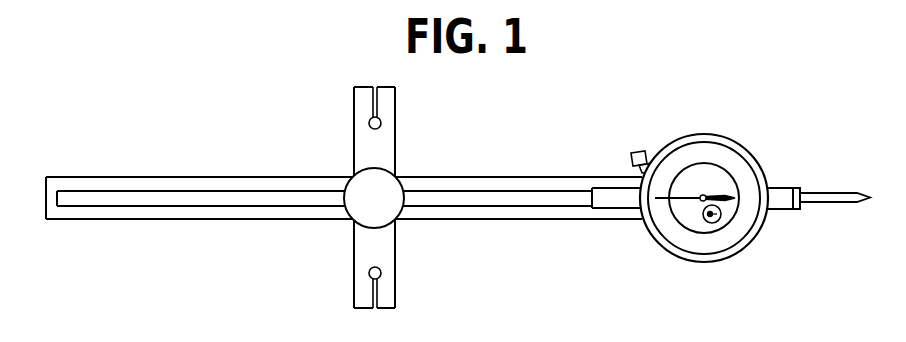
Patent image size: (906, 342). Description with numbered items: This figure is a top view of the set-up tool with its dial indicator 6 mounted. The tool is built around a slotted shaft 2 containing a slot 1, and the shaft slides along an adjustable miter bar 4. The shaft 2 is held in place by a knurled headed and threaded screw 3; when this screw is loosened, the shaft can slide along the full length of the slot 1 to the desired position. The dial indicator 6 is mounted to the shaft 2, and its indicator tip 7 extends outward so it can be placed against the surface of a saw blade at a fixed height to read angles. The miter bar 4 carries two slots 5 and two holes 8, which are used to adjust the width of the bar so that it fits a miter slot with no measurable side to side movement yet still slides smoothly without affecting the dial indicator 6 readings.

The slot 1 is at (133, 198).
The slotted shaft 2 is at (278, 185).
The knurled headed and threaded screw 3 is at (355, 220).
The adjustable miter bar 4 is at (354, 148).
The slots 5 is at (377, 103).
The dial indicator 6 is at (748, 242).
The indicator tip 7 is at (857, 192).
The holes 8 is at (380, 124).